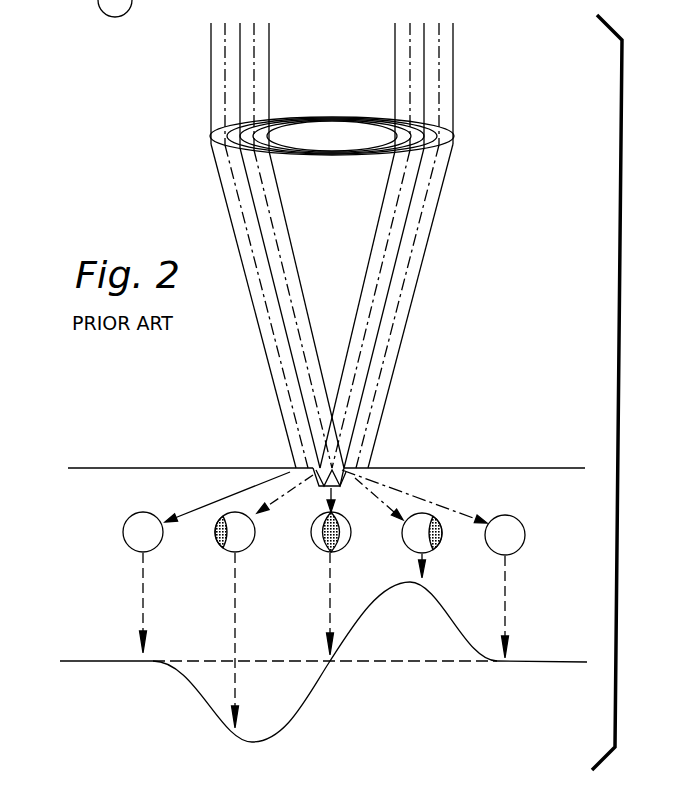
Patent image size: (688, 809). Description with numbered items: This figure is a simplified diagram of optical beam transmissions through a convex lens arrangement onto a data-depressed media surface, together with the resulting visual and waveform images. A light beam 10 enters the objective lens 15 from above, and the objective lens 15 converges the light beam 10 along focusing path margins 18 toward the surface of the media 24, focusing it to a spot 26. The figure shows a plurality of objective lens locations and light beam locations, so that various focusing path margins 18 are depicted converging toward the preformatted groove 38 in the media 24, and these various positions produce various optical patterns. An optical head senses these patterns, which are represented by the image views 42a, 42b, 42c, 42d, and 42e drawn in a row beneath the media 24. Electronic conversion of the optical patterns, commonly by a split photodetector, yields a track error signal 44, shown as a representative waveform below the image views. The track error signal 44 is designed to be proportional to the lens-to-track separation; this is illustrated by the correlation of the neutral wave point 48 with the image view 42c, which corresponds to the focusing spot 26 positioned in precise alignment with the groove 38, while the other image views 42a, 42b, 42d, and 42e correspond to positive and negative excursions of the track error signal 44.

The light beam 10 is at (210, 80).
The objective lens 15 is at (303, 133).
The focusing path margins 18 is at (324, 306).
The media 24 is at (190, 477).
The spot 26 is at (370, 437).
The groove 38 is at (350, 485).
The image view 42a is at (520, 550).
The image view 42b is at (407, 552).
The image view 42c is at (322, 550).
The image view 42d is at (227, 550).
The image view 42e is at (125, 545).
The track error signal 44 is at (212, 703).
The neutral wave point 48 is at (330, 663).